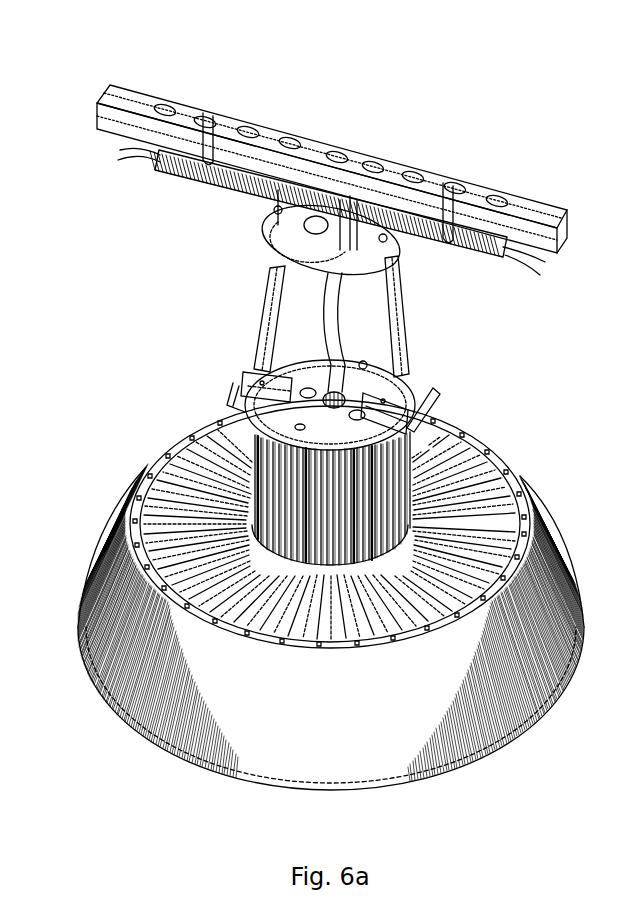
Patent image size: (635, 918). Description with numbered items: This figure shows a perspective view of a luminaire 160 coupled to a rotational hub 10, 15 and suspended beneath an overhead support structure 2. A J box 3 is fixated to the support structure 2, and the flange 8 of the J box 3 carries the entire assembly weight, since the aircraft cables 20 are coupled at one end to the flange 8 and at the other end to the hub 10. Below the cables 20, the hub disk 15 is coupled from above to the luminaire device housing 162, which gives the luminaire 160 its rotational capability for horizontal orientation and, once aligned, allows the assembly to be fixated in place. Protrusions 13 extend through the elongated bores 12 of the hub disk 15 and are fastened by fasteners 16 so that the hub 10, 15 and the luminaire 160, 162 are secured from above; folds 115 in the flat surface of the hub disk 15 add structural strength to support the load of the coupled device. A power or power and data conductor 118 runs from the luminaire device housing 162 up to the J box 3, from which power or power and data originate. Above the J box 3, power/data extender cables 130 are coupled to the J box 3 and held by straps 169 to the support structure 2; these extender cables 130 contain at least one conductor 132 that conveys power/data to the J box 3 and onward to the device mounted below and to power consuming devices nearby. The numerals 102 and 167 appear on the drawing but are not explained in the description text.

The support structure 2 is at (150, 105).
The J box 3 is at (331, 202).
The flange 8 is at (292, 263).
The rotational hub 10 is at (269, 517).
The elongated bores 12 is at (346, 364).
The protrusions 13 is at (359, 391).
The hub disk 15 is at (269, 517).
The fasteners 16 is at (368, 368).
The aircraft cables 20 is at (268, 299).
The support arm 102 is at (455, 316).
The folds 115 is at (437, 392).
The power or power and data conductor 118 is at (390, 304).
The power/data extender cables 130 is at (190, 182).
The conductor 132 is at (128, 160).
The luminaire 160 is at (269, 535).
The luminaire device housing 162 is at (269, 535).
The retaining clip 167 is at (258, 385).
The straps 169 is at (455, 228).